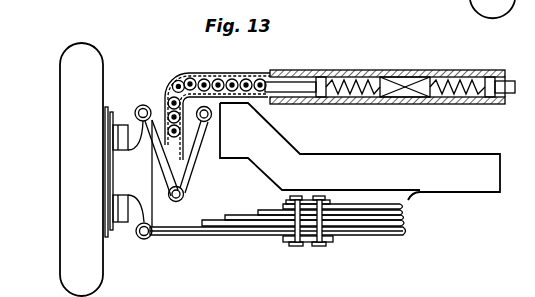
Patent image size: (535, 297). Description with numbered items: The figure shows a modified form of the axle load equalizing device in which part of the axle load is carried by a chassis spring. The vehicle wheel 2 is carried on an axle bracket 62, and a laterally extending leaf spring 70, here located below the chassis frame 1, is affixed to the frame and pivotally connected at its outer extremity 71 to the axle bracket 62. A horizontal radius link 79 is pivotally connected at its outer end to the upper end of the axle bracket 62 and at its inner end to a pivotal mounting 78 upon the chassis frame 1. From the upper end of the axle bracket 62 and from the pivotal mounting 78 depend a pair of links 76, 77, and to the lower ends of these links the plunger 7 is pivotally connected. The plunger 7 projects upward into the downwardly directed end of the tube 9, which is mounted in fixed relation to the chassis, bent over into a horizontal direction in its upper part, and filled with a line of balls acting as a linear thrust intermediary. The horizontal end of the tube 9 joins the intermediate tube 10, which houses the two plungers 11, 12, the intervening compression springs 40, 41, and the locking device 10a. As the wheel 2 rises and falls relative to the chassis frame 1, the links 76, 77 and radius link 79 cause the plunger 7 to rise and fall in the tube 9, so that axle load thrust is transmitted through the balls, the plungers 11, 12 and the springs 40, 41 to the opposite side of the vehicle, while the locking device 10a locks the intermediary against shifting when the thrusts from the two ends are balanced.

The chassis frame 1 is at (240, 136).
The wheel 2 is at (60, 137).
The plunger 7 is at (187, 170).
The tube 9 is at (203, 78).
The intermediate tube 10 is at (316, 71).
The locking device 10a is at (426, 72).
The plunger 11 is at (300, 88).
The plunger 12 is at (493, 95).
The compression spring 40 is at (357, 72).
The compression spring 41 is at (470, 73).
The axle bracket 62 is at (120, 177).
The leaf spring 70 is at (247, 218).
The outer extremity 71 is at (145, 239).
The link 76 is at (175, 202).
The link 77 is at (190, 152).
The pivotal mounting 78 is at (207, 107).
The horizontal radius link 79 is at (143, 105).